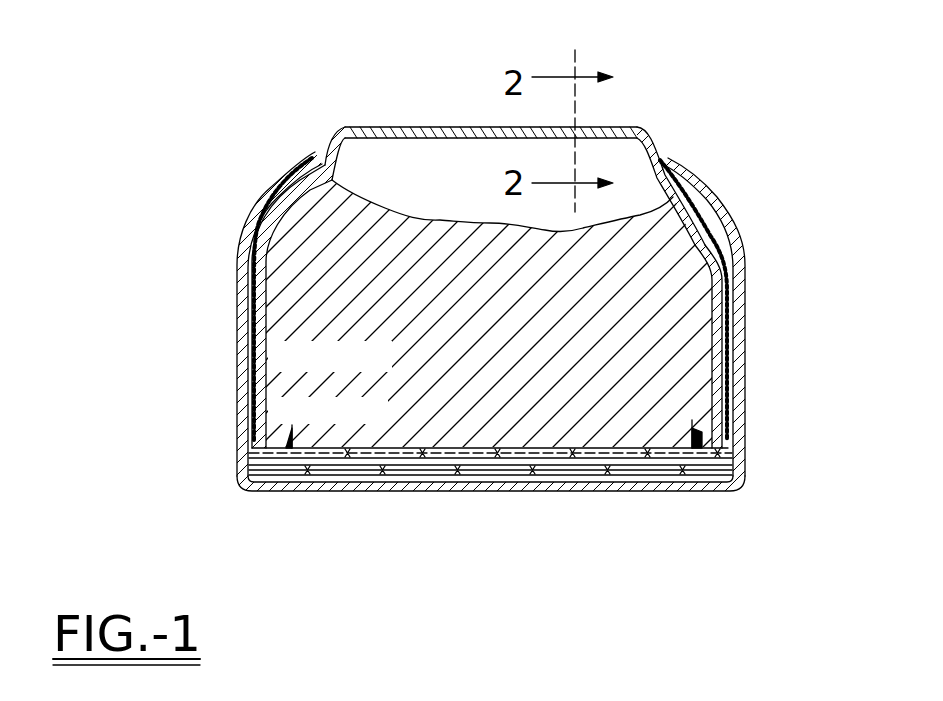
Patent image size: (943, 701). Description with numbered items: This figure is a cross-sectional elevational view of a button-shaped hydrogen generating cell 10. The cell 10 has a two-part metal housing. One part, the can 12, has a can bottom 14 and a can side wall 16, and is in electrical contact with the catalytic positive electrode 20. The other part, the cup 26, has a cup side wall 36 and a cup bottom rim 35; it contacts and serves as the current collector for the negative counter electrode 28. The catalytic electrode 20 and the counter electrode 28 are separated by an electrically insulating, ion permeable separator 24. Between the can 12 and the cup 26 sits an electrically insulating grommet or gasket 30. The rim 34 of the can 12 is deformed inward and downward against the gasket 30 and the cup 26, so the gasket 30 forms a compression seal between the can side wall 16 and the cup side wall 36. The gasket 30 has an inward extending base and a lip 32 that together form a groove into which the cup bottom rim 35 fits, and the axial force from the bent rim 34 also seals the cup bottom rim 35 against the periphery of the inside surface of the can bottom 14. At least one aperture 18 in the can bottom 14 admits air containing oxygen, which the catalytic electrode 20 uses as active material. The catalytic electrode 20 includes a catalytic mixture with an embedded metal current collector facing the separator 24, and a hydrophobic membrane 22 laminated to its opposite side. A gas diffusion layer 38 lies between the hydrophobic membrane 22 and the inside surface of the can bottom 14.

The cell 10 is at (298, 110).
The can 12 is at (252, 184).
The can bottom 14 is at (385, 491).
The can side wall 16 is at (252, 350).
The aperture 18 is at (485, 491).
The catalytic positive electrode 20 is at (742, 478).
The hydrophobic membrane 22 is at (647, 491).
The separator 24 is at (720, 453).
The cup 26 is at (467, 108).
The negative counter electrode 28 is at (431, 210).
The gasket 30 is at (241, 256).
The lip 32 is at (290, 420).
The rim 34 is at (668, 156).
The cup bottom rim 35 is at (243, 452).
The cup side wall 36 is at (300, 343).
The gas diffusion layer 38 is at (533, 491).